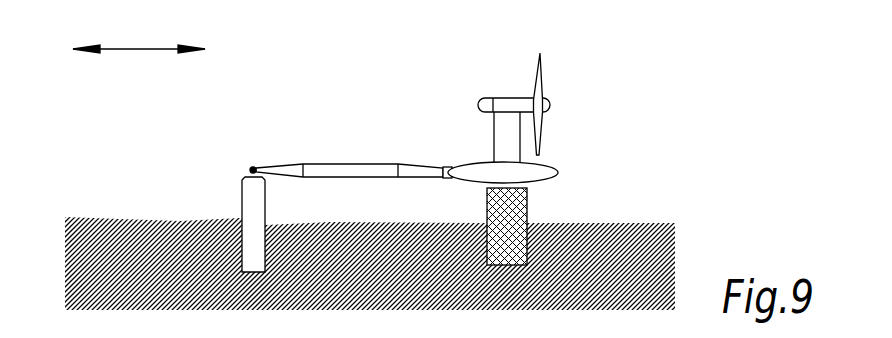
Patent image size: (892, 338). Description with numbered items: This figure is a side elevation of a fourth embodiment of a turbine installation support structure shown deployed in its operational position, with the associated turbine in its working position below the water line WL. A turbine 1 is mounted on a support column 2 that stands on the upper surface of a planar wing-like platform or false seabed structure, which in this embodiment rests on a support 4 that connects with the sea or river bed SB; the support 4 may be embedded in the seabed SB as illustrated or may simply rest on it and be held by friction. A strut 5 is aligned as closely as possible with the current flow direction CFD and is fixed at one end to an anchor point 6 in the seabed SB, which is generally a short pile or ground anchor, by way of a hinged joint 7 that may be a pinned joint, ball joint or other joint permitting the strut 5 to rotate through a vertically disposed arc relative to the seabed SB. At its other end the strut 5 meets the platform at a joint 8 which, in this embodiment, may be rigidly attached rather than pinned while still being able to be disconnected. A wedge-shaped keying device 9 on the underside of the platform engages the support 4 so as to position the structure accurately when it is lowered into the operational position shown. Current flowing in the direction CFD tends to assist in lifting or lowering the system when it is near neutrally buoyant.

The turbine 1 is at (544, 89).
The support column 2 is at (500, 132).
The support 4 is at (528, 208).
The strut 5 is at (357, 168).
The anchor point 6 is at (247, 193).
The hinged joint 7 is at (253, 167).
The joint 8 is at (447, 165).
The wedge-shaped keying device 9 is at (487, 196).
The current flow direction CFD is at (139, 34).
The water line WL is at (598, 0).
The seabed SB is at (150, 235).